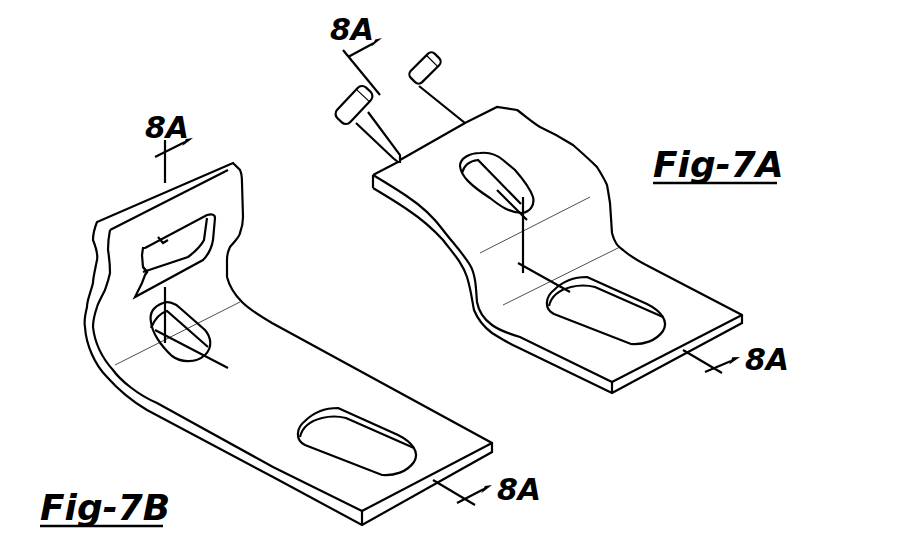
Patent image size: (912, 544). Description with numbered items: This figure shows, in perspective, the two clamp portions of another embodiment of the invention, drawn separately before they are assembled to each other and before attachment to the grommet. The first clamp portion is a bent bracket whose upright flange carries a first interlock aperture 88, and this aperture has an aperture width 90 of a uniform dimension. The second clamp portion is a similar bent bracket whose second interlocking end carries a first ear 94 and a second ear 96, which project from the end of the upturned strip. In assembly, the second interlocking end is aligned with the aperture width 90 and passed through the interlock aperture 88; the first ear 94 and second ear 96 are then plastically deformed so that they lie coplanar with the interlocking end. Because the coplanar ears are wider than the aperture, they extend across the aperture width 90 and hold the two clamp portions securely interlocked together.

In FIG. 7B, the first interlock aperture 88 is at (164, 244).
In FIG. 7B, the aperture width 90 is at (146, 272).
In FIG. 7A, the first ear 94 is at (334, 118).
In FIG. 7A, the second ear 96 is at (434, 55).